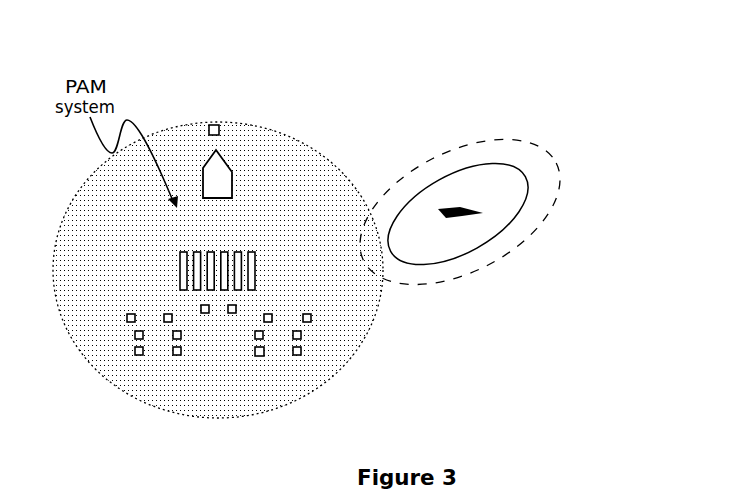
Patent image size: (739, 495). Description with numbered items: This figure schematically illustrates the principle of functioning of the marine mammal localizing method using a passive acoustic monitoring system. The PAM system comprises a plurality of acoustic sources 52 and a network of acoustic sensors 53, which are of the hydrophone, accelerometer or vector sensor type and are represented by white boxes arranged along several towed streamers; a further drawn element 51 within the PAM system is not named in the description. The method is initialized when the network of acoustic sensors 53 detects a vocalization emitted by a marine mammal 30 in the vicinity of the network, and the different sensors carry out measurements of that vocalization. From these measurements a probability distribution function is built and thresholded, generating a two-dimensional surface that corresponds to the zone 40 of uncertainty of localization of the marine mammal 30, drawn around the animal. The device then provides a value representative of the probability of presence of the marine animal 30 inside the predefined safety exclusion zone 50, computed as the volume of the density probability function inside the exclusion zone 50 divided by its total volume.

The marine mammal 30 is at (452, 206).
The zone of uncertainty of localization 40 is at (550, 146).
The safety exclusion zone 50 is at (102, 373).
The house-shaped structure 51 is at (231, 170).
The acoustic sources 52 is at (249, 261).
The acoustic sensors 53 is at (216, 125).